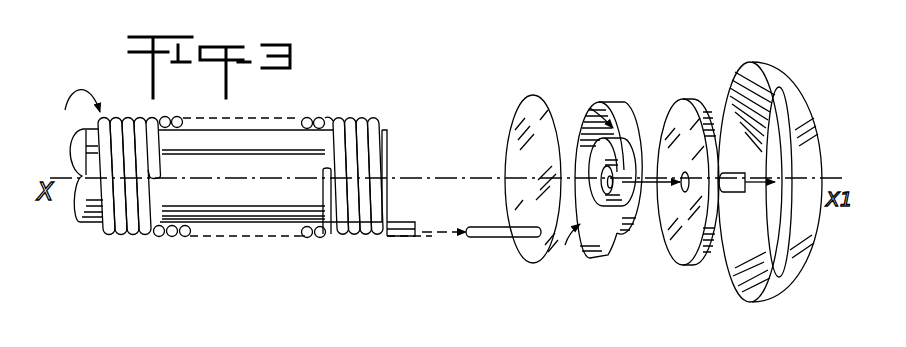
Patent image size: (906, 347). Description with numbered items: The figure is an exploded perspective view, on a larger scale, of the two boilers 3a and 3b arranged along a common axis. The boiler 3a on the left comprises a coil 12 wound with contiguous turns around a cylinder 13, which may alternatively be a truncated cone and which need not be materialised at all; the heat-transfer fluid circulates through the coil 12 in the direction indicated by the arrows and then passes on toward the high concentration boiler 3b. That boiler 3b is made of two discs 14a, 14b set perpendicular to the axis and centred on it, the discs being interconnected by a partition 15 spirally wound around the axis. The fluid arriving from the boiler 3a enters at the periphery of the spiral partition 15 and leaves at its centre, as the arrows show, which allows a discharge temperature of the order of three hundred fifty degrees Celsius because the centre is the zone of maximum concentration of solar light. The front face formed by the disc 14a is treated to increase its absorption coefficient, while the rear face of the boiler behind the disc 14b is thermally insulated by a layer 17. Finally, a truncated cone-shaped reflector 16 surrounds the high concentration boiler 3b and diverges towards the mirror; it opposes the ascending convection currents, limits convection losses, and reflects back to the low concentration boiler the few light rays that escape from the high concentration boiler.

The coil 12 is at (340, 121).
The cylinder 13 is at (233, 200).
The first disc 14a is at (529, 123).
The second disc 14b is at (677, 110).
The partition 15 is at (617, 108).
The truncated cone-shaped reflector 16 is at (805, 125).
The thermal insulation layer 17 is at (709, 112).
The boiler 3a is at (298, 246).
The high concentration boiler 3b is at (708, 268).